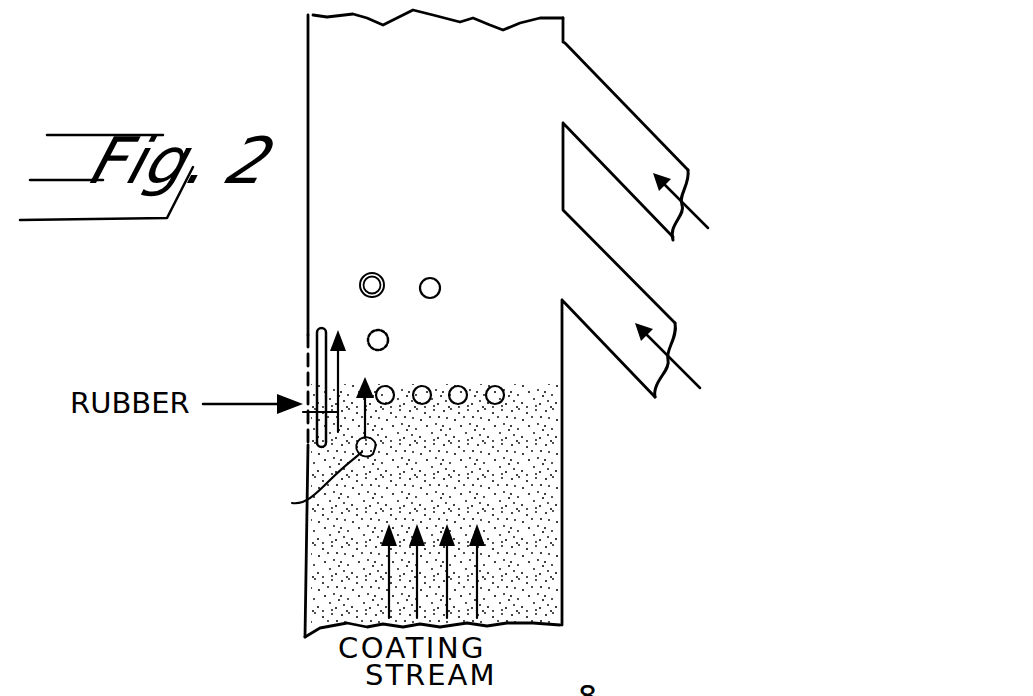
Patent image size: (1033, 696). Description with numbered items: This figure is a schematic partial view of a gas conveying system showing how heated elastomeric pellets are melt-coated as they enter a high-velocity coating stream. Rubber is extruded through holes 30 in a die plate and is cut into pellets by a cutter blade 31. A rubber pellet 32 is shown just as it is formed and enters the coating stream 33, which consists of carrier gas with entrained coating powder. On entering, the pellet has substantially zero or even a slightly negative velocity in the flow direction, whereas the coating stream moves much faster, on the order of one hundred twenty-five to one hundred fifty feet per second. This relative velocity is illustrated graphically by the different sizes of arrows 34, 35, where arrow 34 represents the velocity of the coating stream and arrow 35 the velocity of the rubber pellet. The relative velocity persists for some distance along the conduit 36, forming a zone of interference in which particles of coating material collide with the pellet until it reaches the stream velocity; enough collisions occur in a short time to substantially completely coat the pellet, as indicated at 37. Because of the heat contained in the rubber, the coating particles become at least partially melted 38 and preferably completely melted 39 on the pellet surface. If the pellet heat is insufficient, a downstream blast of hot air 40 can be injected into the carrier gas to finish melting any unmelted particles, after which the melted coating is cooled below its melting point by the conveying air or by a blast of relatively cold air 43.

The holes in the die plate 30 is at (307, 388).
The cutter blade 31 is at (315, 342).
The rubber pellet 32 is at (307, 490).
The coating stream 33 is at (537, 483).
The coating stream velocity arrow 34 is at (310, 412).
The rubber pellet velocity arrow 35 is at (363, 413).
The conduit 36 is at (307, 556).
The coated rubber pellet 37 is at (390, 338).
The partially melted coating particles 38 is at (421, 279).
The completely melted coating particles 39 is at (380, 273).
The blast of hot air 40 is at (663, 332).
The blast of relatively cold air 43 is at (677, 177).